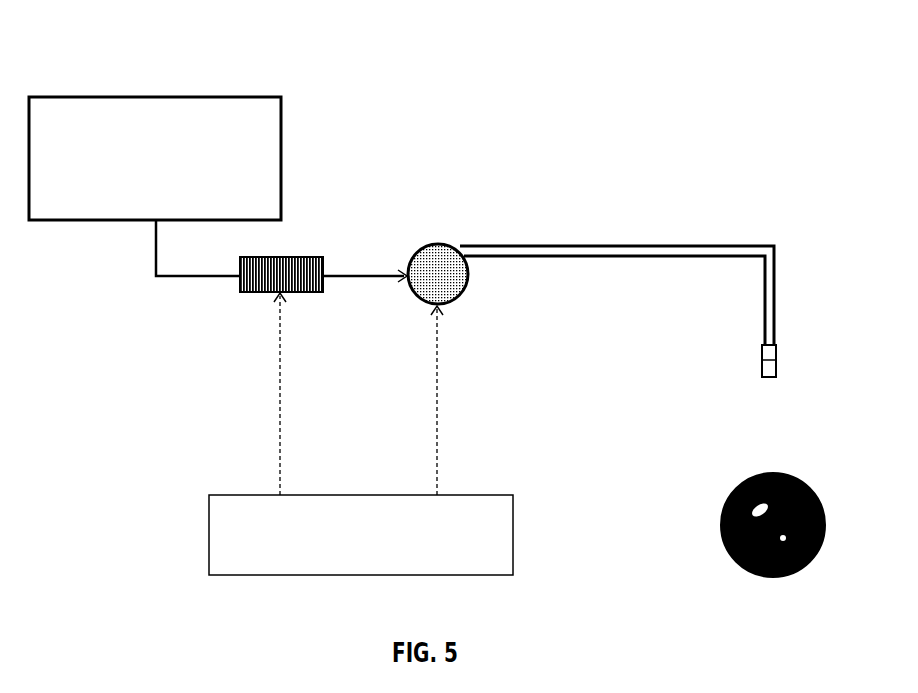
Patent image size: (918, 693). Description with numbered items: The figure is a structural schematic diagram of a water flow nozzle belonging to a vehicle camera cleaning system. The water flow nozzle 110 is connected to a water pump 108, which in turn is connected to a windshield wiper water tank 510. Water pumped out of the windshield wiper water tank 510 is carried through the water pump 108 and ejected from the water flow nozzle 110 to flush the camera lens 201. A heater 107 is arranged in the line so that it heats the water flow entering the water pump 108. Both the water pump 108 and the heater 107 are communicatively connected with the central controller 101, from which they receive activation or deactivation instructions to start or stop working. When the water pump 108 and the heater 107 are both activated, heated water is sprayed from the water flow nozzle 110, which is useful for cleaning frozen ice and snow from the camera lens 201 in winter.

The windshield wiper water tank 510 is at (267, 118).
The heater 107 is at (307, 257).
The water pump 108 is at (432, 263).
The water flow nozzle 110 is at (762, 357).
The central controller 101 is at (483, 517).
The camera lens 201 is at (720, 527).